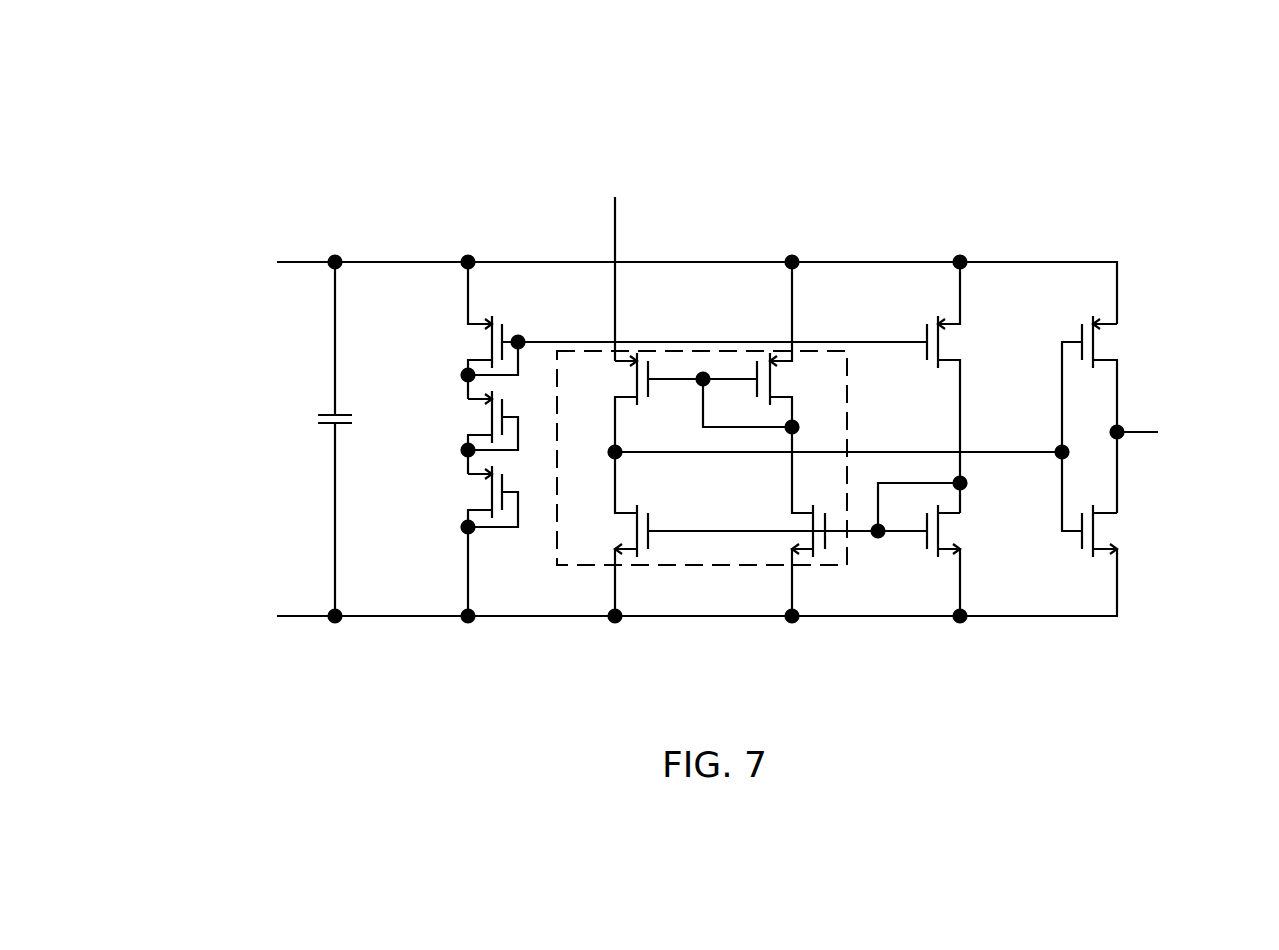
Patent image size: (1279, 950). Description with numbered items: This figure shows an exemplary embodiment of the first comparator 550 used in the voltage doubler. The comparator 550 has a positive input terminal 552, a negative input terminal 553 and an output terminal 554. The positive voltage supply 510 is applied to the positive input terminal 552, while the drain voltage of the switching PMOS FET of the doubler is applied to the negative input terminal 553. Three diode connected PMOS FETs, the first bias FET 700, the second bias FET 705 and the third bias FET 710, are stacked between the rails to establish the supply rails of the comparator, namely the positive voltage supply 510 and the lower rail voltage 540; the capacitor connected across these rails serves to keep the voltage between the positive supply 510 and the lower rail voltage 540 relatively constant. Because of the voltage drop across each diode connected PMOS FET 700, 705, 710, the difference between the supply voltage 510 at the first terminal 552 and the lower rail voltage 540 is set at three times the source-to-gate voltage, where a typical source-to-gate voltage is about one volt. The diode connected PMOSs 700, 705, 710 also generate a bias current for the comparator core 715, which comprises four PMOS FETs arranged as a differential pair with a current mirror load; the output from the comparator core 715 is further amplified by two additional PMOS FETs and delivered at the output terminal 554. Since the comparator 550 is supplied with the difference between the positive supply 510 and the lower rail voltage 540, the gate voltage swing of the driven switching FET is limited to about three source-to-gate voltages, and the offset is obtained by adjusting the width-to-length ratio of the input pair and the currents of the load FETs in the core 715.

The first comparator A_P 550 is at (242, 67).
The positive voltage supply V_DD 510 is at (248, 245).
The positive input terminal 552 is at (252, 315).
The negative input terminal 553 is at (622, 172).
The output terminal N_AP 554 is at (1175, 418).
The voltage V_P1 540 is at (235, 600).
The diode connected PMOS FET M_BP1 700 is at (412, 342).
The diode connected PMOS FET M_BP2 705 is at (414, 420).
The diode connected PMOS FET M_BP3 710 is at (414, 497).
The comparator core 715 is at (548, 552).